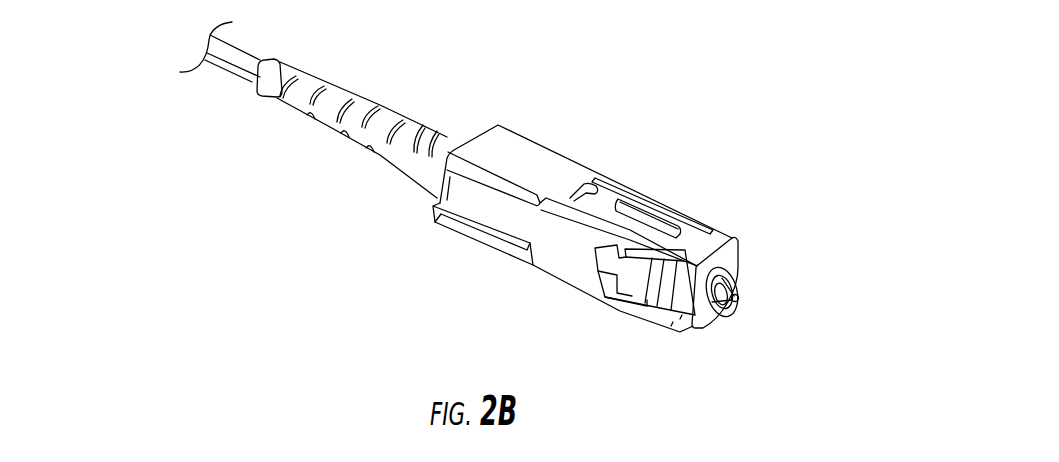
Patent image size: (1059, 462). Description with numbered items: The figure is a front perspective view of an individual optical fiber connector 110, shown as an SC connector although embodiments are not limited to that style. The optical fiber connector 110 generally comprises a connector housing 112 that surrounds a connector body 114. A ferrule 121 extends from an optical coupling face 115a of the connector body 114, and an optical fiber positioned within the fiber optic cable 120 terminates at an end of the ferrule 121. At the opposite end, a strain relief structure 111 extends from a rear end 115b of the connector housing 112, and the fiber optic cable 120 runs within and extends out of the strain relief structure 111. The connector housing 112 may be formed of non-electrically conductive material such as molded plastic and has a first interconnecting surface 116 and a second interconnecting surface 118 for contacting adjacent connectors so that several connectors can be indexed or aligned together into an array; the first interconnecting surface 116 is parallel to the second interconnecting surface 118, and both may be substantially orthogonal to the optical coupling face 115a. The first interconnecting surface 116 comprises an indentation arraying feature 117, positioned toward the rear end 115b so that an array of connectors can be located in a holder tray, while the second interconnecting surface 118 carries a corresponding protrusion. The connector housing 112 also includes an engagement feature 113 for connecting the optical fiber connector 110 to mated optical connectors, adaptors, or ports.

The optical fiber connector 110 is at (666, 134).
The strain relief structure 111 is at (363, 148).
The connector housing 112 is at (534, 289).
The engagement feature 113 is at (638, 275).
The connector body 114 is at (702, 318).
The optical coupling face 115a is at (692, 323).
The rear end 115b is at (435, 205).
The first interconnecting surface 116 is at (606, 296).
The indentation arraying feature 117 is at (492, 207).
The second interconnecting surface 118 is at (637, 198).
The fiber optic cable 120 is at (230, 58).
The ferrule 121 is at (738, 302).